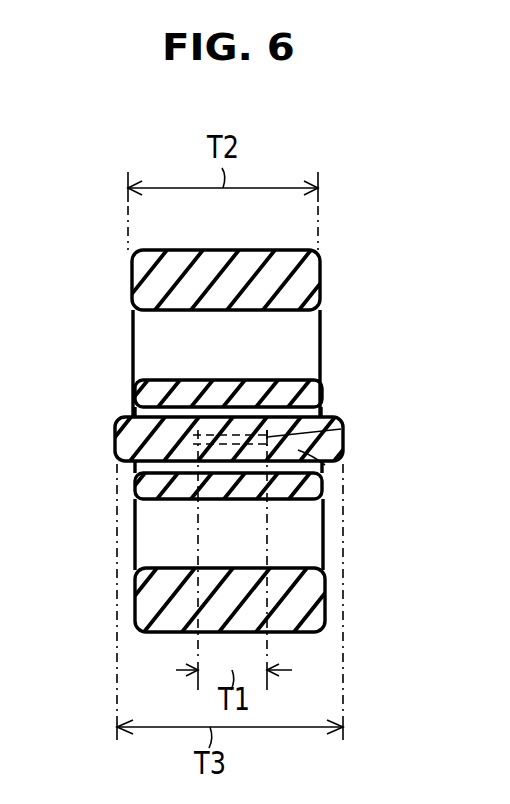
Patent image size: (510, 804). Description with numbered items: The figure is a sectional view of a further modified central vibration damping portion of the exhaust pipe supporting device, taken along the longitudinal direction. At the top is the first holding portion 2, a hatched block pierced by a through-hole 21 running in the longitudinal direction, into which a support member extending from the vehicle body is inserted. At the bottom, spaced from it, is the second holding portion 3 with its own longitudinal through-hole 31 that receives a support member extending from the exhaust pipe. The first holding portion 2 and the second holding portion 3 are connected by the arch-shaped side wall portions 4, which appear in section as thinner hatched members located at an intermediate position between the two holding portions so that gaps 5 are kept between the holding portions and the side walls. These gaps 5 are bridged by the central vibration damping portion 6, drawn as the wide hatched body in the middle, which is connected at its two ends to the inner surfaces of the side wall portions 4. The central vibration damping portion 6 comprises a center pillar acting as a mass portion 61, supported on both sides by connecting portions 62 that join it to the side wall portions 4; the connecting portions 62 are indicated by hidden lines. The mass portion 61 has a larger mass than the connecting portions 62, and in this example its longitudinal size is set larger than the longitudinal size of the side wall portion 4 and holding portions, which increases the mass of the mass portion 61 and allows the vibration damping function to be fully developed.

The first holding portion 2 is at (360, 264).
The through-hole 21 is at (362, 323).
The side wall portion 4 is at (382, 371).
The gap 5 is at (138, 413).
The central vibration damping portion 6 is at (96, 452).
The mass portion 61 is at (382, 418).
The connecting portion 62 is at (395, 465).
The through-hole 31 is at (372, 565).
The second holding portion 3 is at (372, 618).